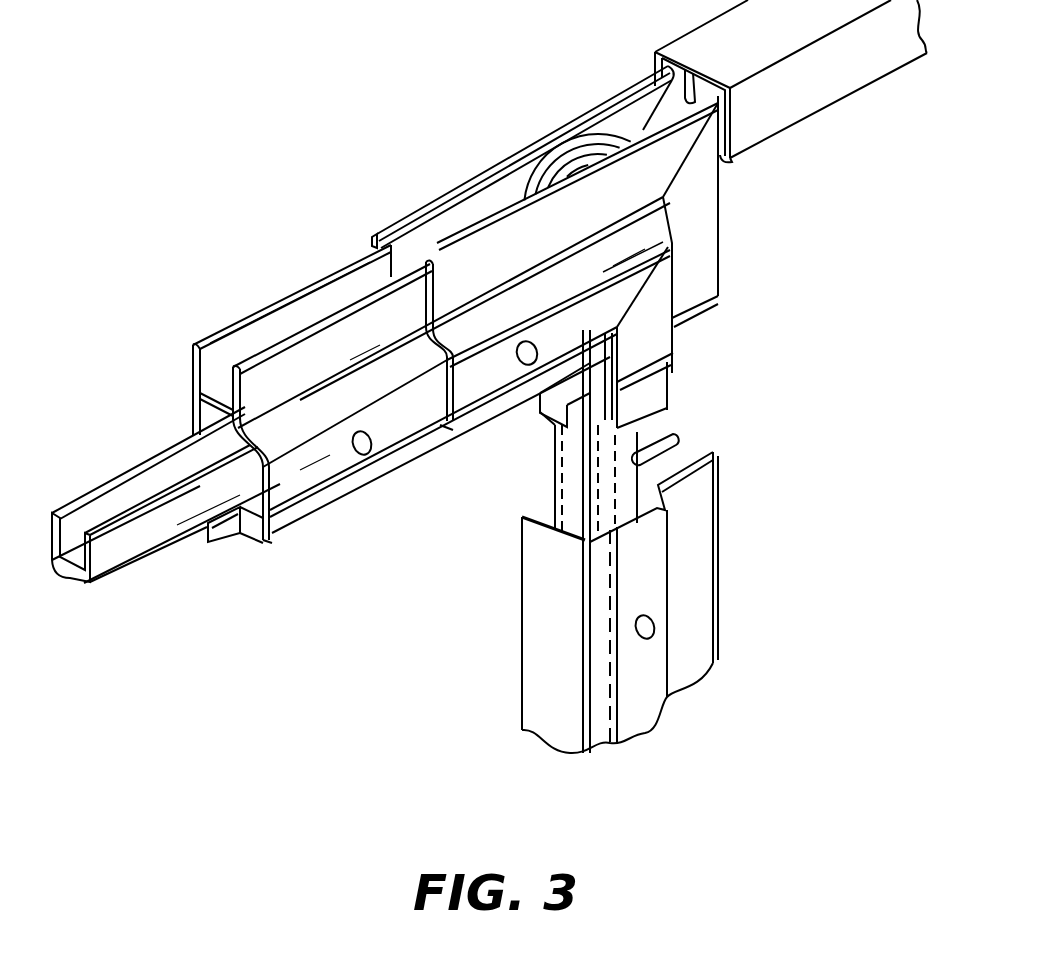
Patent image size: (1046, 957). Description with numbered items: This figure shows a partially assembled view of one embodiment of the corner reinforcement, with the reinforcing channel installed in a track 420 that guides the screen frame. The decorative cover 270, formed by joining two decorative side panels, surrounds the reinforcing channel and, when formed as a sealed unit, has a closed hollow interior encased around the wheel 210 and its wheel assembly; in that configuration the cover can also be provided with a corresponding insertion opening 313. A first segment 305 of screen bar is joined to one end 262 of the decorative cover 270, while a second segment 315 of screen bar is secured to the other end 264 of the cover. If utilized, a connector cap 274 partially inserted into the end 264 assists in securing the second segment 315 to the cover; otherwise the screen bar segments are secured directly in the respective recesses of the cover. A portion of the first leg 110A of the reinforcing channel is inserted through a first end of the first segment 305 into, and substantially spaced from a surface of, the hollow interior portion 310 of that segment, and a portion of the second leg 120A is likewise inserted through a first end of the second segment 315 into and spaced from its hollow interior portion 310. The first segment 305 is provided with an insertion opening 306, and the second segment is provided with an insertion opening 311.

The track 420 is at (821, 122).
The wheel 210 is at (617, 140).
The decorative cover 270 is at (452, 192).
The end of decorative cover 262 is at (372, 232).
The first segment of screen bar 305 is at (242, 311).
The first leg of reinforcing channel 110A is at (125, 467).
The hollow interior portion 310 is at (231, 516).
The insertion opening 306 is at (352, 453).
The insertion opening 313 is at (515, 365).
The second leg of reinforcing channel 120A is at (550, 478).
The end of decorative cover 264 is at (680, 357).
The connector cap 274 is at (672, 388).
The second segment of screen bar 315 is at (724, 550).
The insertion opening 311 is at (652, 635).